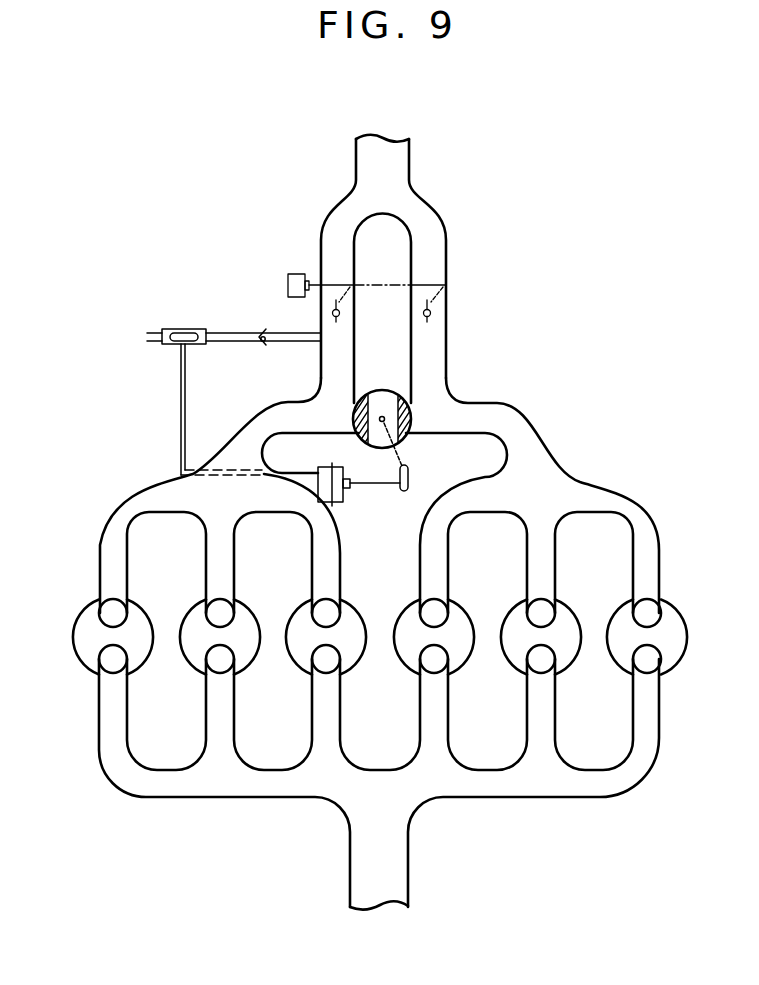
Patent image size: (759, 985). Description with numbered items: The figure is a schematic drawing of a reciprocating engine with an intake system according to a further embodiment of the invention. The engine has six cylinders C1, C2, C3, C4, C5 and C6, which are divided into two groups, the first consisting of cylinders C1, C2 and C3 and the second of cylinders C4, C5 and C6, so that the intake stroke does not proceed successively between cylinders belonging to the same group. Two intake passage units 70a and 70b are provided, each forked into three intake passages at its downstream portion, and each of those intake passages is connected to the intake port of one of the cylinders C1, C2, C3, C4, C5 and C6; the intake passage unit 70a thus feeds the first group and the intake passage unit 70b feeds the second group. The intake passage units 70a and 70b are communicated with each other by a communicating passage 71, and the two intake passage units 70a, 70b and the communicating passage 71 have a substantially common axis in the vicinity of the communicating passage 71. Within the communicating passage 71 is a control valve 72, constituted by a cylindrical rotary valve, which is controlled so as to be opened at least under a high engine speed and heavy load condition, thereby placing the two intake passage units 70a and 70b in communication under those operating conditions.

The intake passage unit 70a is at (240, 437).
The intake passage unit 70b is at (523, 438).
The communicating passage 71 is at (410, 412).
The control valve 72 is at (397, 389).
The cylinder C1 is at (85, 658).
The cylinder C2 is at (192, 658).
The cylinder C3 is at (298, 658).
The cylinder C4 is at (406, 658).
The cylinder C5 is at (513, 658).
The cylinder C6 is at (619, 658).